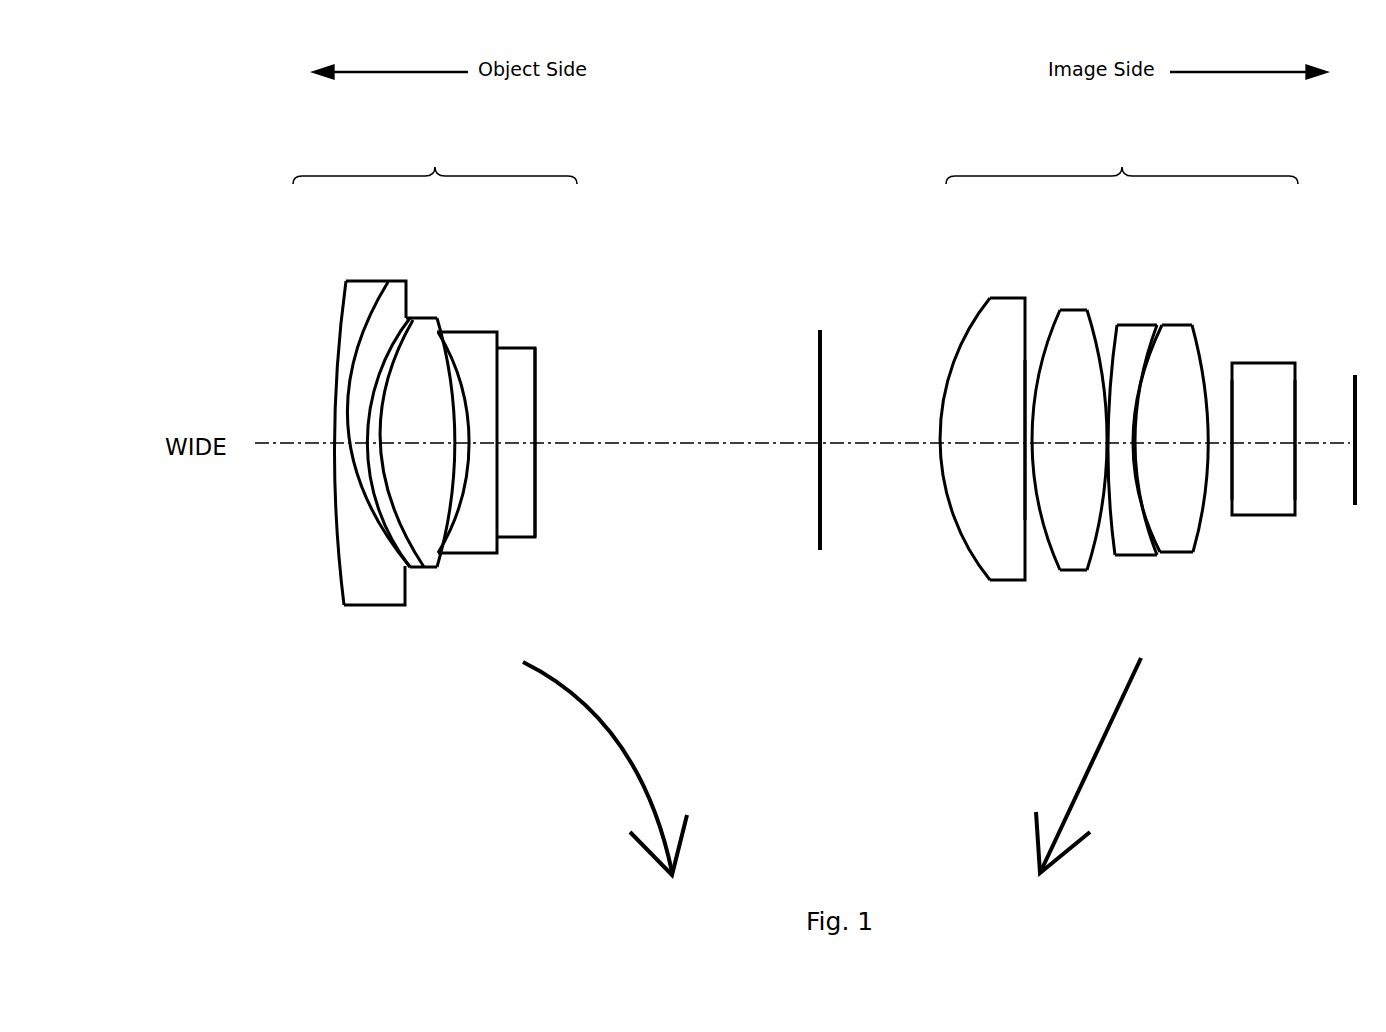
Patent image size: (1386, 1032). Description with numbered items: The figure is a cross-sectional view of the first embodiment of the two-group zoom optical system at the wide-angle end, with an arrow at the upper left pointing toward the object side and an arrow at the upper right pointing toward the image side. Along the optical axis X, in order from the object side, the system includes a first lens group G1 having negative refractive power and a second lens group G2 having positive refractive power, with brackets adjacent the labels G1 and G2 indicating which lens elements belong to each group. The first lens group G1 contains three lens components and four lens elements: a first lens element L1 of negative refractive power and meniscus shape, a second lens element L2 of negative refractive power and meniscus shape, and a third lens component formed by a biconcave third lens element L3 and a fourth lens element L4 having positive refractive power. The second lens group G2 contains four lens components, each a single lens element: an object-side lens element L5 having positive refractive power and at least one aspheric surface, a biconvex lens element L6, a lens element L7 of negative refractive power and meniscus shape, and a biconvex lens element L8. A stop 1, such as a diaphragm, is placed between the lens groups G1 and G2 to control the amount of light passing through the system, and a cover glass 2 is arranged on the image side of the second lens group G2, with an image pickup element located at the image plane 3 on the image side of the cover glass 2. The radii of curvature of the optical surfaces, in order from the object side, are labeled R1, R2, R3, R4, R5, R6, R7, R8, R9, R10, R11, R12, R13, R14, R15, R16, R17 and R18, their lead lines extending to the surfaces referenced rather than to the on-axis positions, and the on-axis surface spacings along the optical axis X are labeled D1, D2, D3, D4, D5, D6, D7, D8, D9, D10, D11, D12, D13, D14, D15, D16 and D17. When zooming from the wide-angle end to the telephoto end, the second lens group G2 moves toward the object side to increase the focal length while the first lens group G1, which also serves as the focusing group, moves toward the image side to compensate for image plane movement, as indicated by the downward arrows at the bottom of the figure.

The stop 1 is at (818, 345).
The cover glass 2 is at (1262, 368).
The image plane 3 is at (1355, 380).
The first lens group G1 is at (435, 153).
The second lens group G2 is at (1122, 153).
The first lens element L1 is at (367, 290).
The second lens element L2 is at (420, 320).
The third lens element L3 is at (483, 334).
The fourth lens element L4 is at (522, 350).
The object-side lens element of the second lens group L5 is at (1003, 303).
The biconvex lens element L6 is at (1074, 314).
The lens element having negative refractive power and a meniscus shape L7 is at (1145, 329).
The biconvex lens element L8 is at (1178, 329).
The radius of curvature of the first surface R1 is at (342, 318).
The radius of curvature of the second surface R2 is at (355, 416).
The radius of curvature of the third surface R3 is at (388, 284).
The radius of curvature of the fourth surface R4 is at (386, 422).
The radius of curvature of the fifth surface R5 is at (446, 388).
The radius of curvature of the sixth surface R6 is at (474, 425).
The radius of curvature of the seventh surface R7 is at (538, 440).
The radius of curvature of the eighth surface R8 is at (820, 390).
The radius of curvature of the ninth surface R9 is at (945, 398).
The radius of curvature of the tenth surface R10 is at (1030, 360).
The radius of curvature of the eleventh surface R11 is at (1040, 340).
The radius of curvature of the twelfth surface R12 is at (1106, 345).
The radius of curvature of the thirteenth surface R13 is at (1129, 400).
The radius of curvature of the fourteenth surface R14 is at (1136, 380).
The radius of curvature of the fifteenth surface R15 is at (1136, 406).
The radius of curvature of the sixteenth surface R16 is at (1209, 383).
The radius of curvature of the seventeenth surface R17 is at (1230, 385).
The radius of curvature of the eighteenth surface R18 is at (1297, 386).
The optical axis X is at (276, 445).
The first on-axis surface spacing D1 is at (345, 447).
The second on-axis surface spacing D2 is at (365, 447).
The third on-axis surface spacing D3 is at (420, 447).
The fourth on-axis surface spacing D4 is at (463, 447).
The fifth on-axis surface spacing D5 is at (481, 447).
The sixth on-axis surface spacing D6 is at (498, 447).
The seventh on-axis surface spacing D7 is at (647, 447).
The eighth on-axis surface spacing D8 is at (880, 447).
The ninth on-axis surface spacing D9 is at (988, 447).
The tenth on-axis surface spacing D10 is at (1032, 447).
The eleventh on-axis surface spacing D11 is at (1065, 447).
The twelfth on-axis surface spacing D12 is at (1105, 447).
The thirteenth on-axis surface spacing D13 is at (1120, 447).
The fourteenth on-axis surface spacing D14 is at (1134, 447).
The fifteenth on-axis surface spacing D15 is at (1170, 447).
The sixteenth on-axis surface spacing D16 is at (1218, 447).
The seventeenth on-axis surface spacing D17 is at (1258, 447).